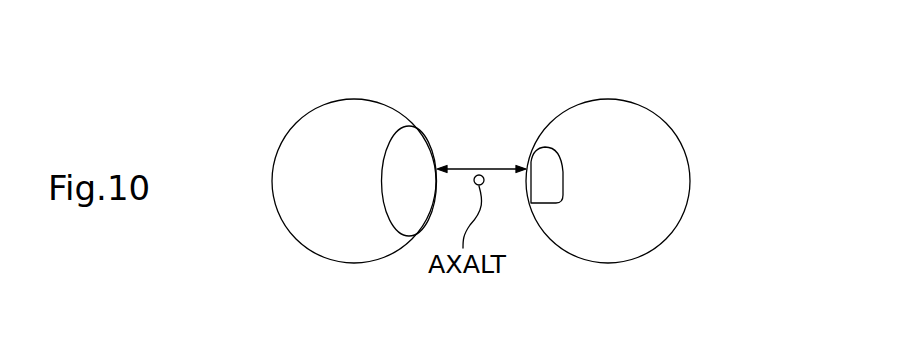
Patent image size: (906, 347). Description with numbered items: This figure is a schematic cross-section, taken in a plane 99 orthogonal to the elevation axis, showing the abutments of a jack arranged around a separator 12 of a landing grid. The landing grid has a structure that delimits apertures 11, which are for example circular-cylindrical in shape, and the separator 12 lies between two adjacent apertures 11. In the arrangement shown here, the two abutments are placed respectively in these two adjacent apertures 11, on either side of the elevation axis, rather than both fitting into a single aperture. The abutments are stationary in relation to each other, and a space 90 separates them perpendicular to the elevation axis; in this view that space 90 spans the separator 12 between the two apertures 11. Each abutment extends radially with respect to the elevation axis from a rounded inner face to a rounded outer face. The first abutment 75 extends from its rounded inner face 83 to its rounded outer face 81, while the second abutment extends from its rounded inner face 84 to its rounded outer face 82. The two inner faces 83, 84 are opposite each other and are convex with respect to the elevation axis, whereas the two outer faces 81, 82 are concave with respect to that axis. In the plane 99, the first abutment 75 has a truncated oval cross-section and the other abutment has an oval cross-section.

The plane 99 is at (233, 200).
The aperture 11 is at (291, 127).
The rounded outer face 82 is at (382, 152).
The rounded inner face 84 is at (428, 138).
The separator 12 is at (479, 110).
The space 90 is at (481, 156).
The rounded inner face 83 is at (530, 162).
The first abutment 75 is at (548, 180).
The rounded outer face 81 is at (563, 187).